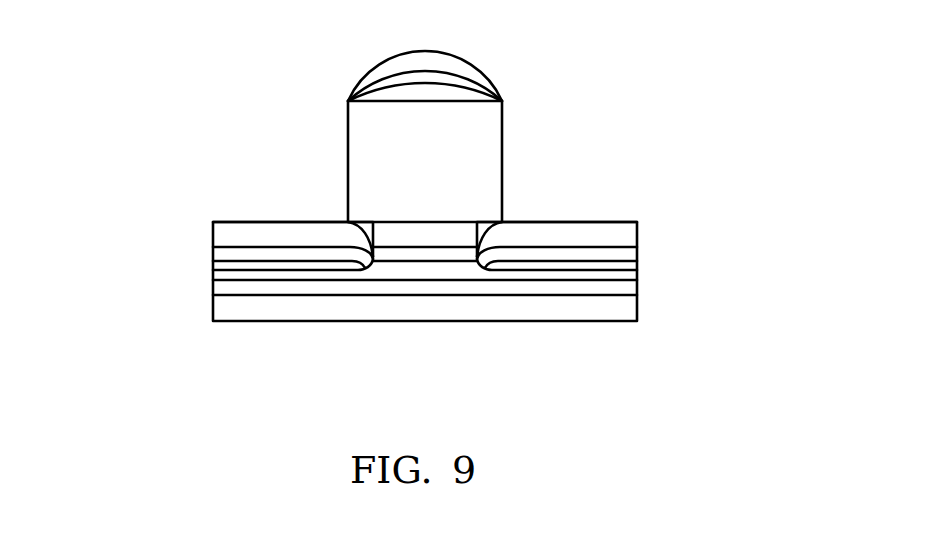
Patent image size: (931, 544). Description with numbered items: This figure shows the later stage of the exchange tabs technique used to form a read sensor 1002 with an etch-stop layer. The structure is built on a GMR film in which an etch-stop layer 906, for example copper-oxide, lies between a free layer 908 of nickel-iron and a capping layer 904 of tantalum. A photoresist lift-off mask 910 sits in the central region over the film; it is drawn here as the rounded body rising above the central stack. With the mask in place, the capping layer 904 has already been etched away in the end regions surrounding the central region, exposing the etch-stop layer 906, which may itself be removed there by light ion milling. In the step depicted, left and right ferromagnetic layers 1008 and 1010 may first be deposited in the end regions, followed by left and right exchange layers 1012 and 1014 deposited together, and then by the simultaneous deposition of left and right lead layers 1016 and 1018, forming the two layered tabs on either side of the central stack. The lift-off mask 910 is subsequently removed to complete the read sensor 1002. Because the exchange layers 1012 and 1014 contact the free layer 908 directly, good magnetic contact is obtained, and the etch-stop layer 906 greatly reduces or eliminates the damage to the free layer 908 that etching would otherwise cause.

The capping layer 904 is at (380, 252).
The etch-stop layer 906 is at (407, 275).
The free layer 908 is at (427, 290).
The lift-off mask 910 is at (480, 123).
The read sensor 1002 is at (375, 337).
The left ferromagnetic layer 1008 is at (215, 268).
The right ferromagnetic layer 1010 is at (622, 265).
The left exchange layer 1012 is at (215, 256).
The right exchange layer 1014 is at (625, 253).
The left lead layer 1016 is at (272, 235).
The right lead layer 1018 is at (612, 225).